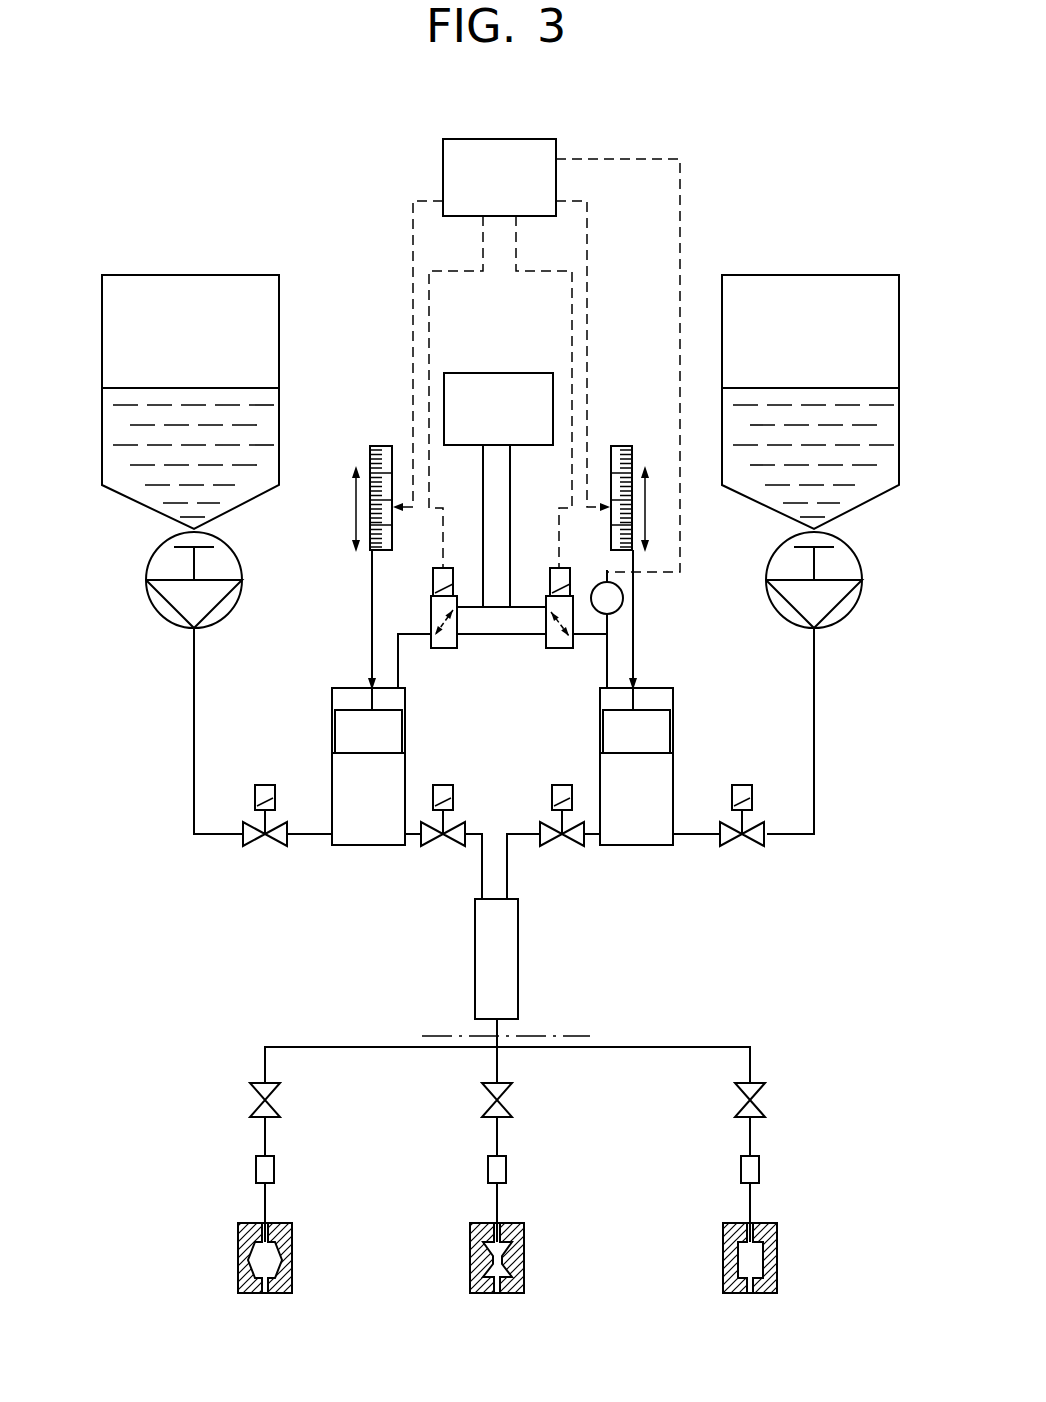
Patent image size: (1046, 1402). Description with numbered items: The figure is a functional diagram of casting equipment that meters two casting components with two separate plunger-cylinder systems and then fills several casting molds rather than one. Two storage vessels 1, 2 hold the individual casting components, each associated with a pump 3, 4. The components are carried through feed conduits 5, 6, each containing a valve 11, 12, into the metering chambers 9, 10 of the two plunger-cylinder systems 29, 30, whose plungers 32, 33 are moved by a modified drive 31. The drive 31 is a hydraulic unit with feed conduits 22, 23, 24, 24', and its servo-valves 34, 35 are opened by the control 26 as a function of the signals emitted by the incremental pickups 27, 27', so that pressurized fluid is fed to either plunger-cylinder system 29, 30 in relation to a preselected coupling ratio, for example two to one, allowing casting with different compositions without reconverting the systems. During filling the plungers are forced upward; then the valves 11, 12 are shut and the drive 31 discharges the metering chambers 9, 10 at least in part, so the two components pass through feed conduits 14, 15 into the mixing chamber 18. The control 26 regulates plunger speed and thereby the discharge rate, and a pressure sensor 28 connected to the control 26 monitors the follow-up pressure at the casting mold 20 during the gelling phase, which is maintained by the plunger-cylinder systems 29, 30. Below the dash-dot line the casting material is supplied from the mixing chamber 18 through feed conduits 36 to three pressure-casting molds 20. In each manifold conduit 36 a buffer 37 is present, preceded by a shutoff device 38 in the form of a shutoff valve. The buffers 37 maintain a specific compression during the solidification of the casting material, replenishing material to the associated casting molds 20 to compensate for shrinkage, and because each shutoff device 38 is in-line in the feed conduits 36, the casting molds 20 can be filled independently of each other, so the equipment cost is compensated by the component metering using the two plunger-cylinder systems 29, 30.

The storage vessel 1 is at (200, 340).
The storage vessel 2 is at (818, 340).
The pump 3 is at (152, 623).
The pump 4 is at (852, 623).
The feed conduit 5 is at (181, 803).
The feed conduit 6 is at (824, 738).
The metering chamber 9 is at (380, 836).
The metering chamber 10 is at (657, 836).
The valve 11 is at (268, 841).
The valve 12 is at (745, 841).
The feed conduit 14 is at (446, 841).
The feed conduit 15 is at (565, 841).
The mixing chamber 18 is at (510, 967).
The casting mold 20 is at (280, 1294).
The feed conduit 22 is at (510, 578).
The feed conduit 23 is at (478, 580).
The feed conduit 24 is at (440, 684).
The feed conduit 24' is at (566, 686).
The control 26 is at (518, 197).
The incremental pickup 27 is at (416, 578).
The incremental pickup 27' is at (583, 578).
The pressure sensor 28 is at (618, 604).
The plunger-cylinder system 29 is at (328, 750).
The plunger-cylinder system 30 is at (677, 750).
The drive 31 is at (518, 435).
The plunger 32 is at (368, 731).
The plunger 33 is at (636, 731).
The servo-valve 34 is at (431, 608).
The servo-valve 35 is at (573, 605).
The feed conduit 36 is at (300, 1047).
The buffer 37 is at (257, 1170).
The shutoff device 38 is at (250, 1100).